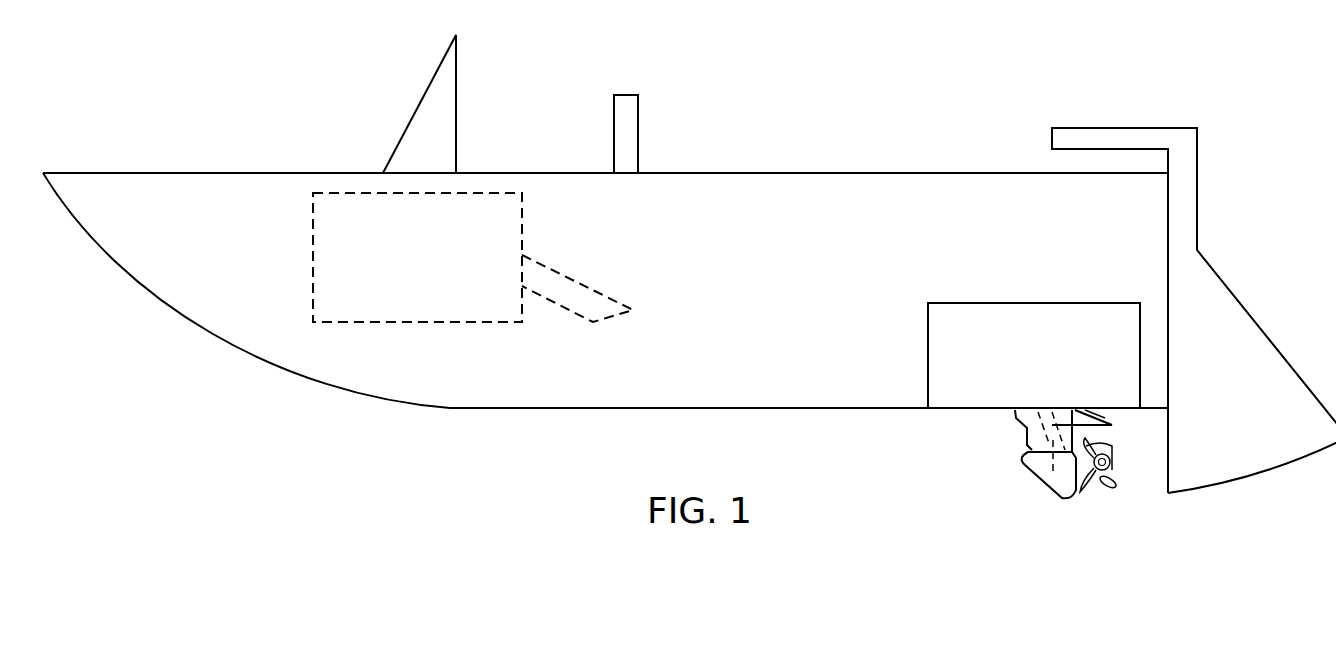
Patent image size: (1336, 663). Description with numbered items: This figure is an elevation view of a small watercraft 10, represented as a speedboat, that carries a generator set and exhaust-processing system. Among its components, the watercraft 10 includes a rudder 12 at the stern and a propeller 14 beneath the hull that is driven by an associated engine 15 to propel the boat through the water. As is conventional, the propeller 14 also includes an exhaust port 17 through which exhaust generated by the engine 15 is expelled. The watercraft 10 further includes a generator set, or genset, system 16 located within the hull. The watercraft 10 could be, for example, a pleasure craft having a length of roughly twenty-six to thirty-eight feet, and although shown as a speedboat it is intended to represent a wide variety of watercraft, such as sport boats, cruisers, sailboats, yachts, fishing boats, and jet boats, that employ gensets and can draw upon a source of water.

The watercraft 10 is at (1147, 61).
The rudder 12 is at (1246, 399).
The propeller 14 is at (998, 484).
The engine 15 is at (926, 377).
The generator set system 16 is at (577, 244).
The exhaust port 17 is at (1045, 438).